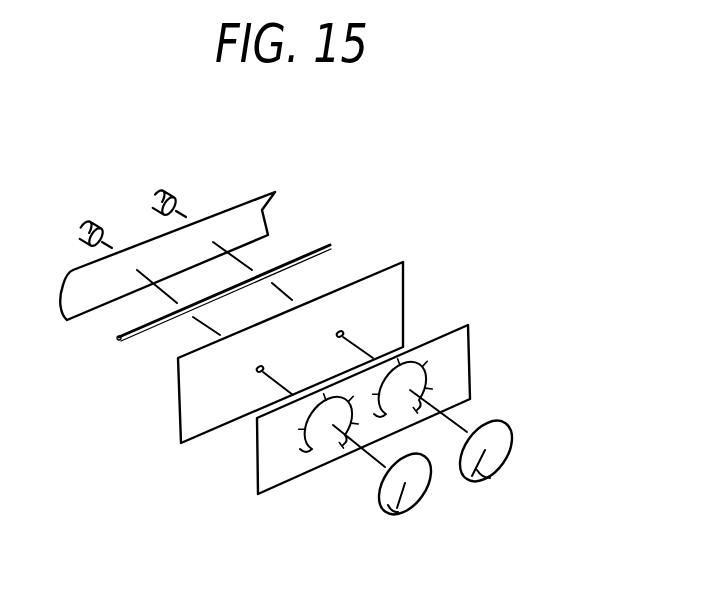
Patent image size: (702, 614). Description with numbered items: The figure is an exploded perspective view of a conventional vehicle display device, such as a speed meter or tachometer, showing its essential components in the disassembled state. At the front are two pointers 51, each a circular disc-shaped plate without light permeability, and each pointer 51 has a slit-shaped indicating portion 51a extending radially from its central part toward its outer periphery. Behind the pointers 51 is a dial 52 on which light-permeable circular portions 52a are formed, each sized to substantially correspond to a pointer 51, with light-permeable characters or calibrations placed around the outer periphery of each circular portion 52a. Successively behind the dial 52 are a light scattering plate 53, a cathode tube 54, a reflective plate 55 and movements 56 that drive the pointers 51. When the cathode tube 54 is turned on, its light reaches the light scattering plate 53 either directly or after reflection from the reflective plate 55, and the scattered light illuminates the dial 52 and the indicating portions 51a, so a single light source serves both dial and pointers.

The pointer 51 is at (420, 500).
The indicating portion 51a is at (398, 514).
The dial 52 is at (470, 333).
The circular portion 52a is at (306, 462).
The light scattering plate 53 is at (393, 293).
The cathode tube 54 is at (337, 243).
The reflective plate 55 is at (274, 203).
The movement 56 is at (81, 228).